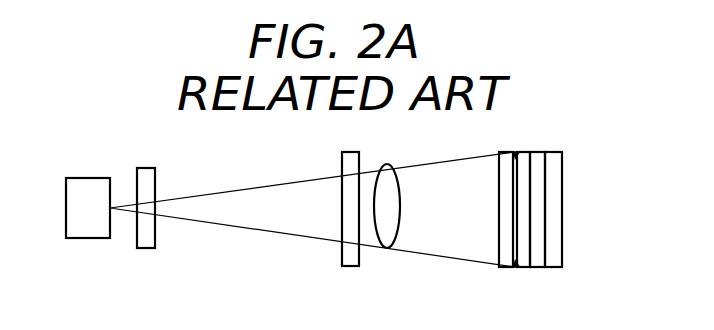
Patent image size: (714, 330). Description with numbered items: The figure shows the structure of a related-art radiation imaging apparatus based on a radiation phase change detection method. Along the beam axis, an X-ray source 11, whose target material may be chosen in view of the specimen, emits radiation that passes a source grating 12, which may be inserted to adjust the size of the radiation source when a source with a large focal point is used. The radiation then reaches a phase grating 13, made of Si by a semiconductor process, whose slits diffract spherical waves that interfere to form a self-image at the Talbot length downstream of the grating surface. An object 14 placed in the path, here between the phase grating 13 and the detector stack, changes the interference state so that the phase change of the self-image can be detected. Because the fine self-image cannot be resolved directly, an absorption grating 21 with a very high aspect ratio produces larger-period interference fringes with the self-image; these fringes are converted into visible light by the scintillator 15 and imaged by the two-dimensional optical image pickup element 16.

The X-ray source 11 is at (83, 238).
The source grating 12 is at (145, 248).
The phase grating 13 is at (347, 266).
The object 14 is at (388, 248).
The absorption grating 21 is at (510, 267).
The scintillator 15 is at (537, 267).
The two-dimensional optical image pickup element 16 is at (553, 267).